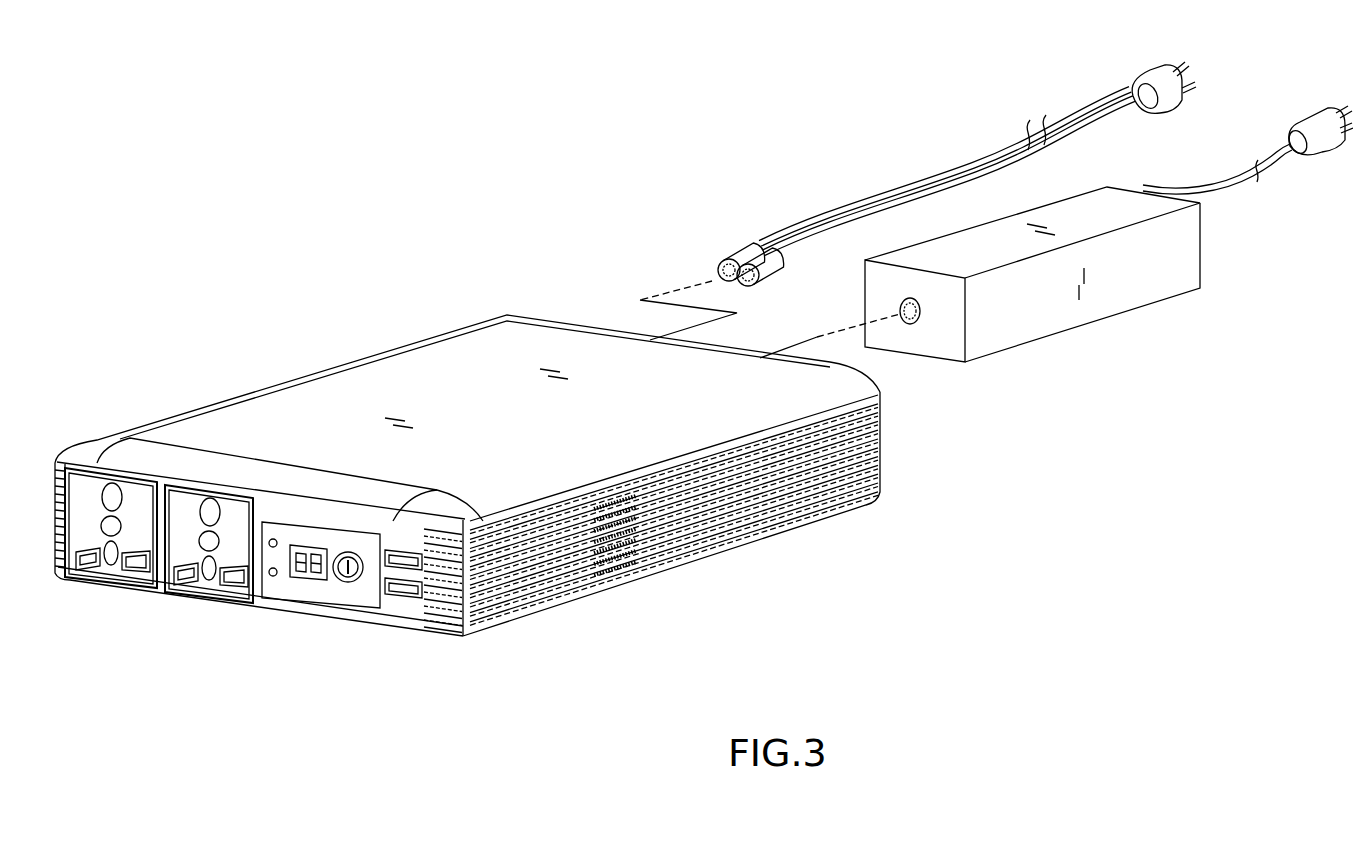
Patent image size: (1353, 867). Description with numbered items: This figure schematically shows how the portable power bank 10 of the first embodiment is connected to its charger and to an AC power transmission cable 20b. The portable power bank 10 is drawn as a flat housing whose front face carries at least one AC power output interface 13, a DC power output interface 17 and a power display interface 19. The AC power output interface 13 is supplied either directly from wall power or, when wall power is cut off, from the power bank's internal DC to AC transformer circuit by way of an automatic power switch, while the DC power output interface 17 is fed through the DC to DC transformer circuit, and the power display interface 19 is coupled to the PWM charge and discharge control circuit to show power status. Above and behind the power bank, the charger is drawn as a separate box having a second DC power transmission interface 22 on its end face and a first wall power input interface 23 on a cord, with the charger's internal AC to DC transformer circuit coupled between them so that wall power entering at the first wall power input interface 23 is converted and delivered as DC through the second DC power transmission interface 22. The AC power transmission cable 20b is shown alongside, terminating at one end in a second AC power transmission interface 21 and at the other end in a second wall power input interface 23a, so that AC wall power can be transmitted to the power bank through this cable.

The portable power bank 10 is at (229, 306).
The AC power output interface 13 is at (117, 568).
The DC power output interface 17 is at (403, 597).
The power display interface 19 is at (317, 593).
The AC power transmission cable 20b is at (965, 172).
The second AC power transmission interface 21 is at (720, 270).
The second DC power transmission interface 22 is at (908, 320).
The first wall power input interface 23 is at (1325, 150).
The second wall power input interface 23a is at (1163, 97).